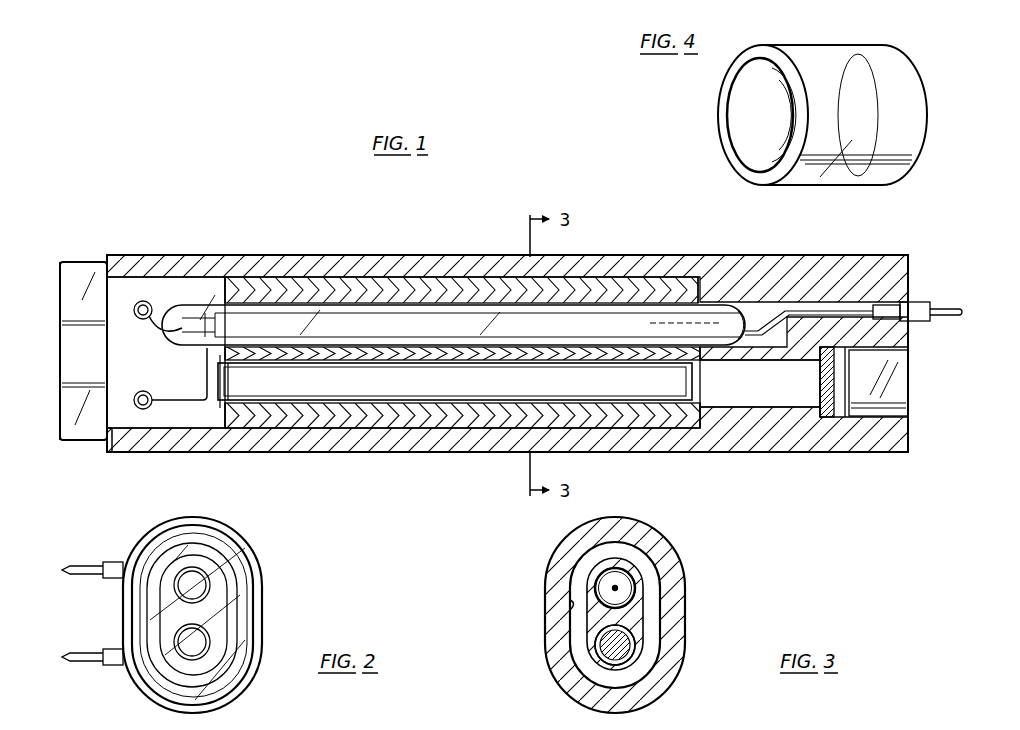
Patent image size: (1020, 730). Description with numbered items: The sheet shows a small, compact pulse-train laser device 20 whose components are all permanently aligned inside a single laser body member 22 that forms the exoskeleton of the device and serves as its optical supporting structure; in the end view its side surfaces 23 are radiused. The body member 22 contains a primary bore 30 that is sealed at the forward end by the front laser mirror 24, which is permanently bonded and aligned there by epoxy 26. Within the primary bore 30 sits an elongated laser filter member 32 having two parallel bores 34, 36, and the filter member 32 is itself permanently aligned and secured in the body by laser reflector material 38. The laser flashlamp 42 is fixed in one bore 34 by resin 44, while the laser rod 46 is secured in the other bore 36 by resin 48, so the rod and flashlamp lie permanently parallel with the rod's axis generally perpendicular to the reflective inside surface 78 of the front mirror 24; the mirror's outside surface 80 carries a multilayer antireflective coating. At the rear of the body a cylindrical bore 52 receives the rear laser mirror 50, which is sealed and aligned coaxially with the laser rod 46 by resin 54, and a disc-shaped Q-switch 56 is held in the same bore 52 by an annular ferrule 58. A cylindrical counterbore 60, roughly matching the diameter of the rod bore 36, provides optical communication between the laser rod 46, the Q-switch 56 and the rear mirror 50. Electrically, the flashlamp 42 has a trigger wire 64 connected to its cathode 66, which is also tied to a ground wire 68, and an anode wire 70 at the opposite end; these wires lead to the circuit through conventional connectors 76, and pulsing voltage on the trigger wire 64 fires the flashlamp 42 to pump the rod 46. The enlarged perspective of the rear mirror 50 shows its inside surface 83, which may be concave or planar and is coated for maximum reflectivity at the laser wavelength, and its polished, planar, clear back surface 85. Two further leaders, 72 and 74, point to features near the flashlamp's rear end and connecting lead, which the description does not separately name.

In FIG. 1, the laser device 20 is at (225, 238).
In FIG. 1, the laser body member 22 is at (298, 266).
In FIG. 2, the laser body member 22 is at (260, 562).
In FIG. 3, the laser body member 22 is at (680, 650).
In FIG. 2, the side surfaces 23 is at (228, 529).
In FIG. 1, the front laser mirror 24 is at (82, 442).
In FIG. 2, the front laser mirror 24 is at (248, 592).
In FIG. 1, the epoxy 26 is at (109, 452).
In FIG. 1, the primary bore 30 is at (203, 423).
In FIG. 3, the primary bore 30 is at (574, 606).
In FIG. 1, the laser filter member 32 is at (333, 411).
In FIG. 3, the laser filter member 32 is at (642, 618).
In FIG. 1, the bore 34 is at (352, 296).
In FIG. 1, the bore 36 is at (352, 445).
In FIG. 1, the laser reflector material 38 is at (665, 423).
In FIG. 3, the laser reflector material 38 is at (632, 552).
In FIG. 1, the laser flashlamp 42 is at (500, 320).
In FIG. 3, the laser flashlamp 42 is at (636, 572).
In FIG. 1, the resin 44 is at (462, 318).
In FIG. 3, the resin 44 is at (600, 573).
In FIG. 1, the laser rod 46 is at (692, 380).
In FIG. 3, the laser rod 46 is at (604, 645).
In FIG. 1, the resin 48 is at (277, 408).
In FIG. 1, the rear laser mirror 50 is at (890, 381).
In FIG. 4, the rear laser mirror 50 is at (828, 46).
In FIG. 1, the cylindrical bore 52 is at (872, 418).
In FIG. 1, the resin 54 is at (906, 419).
In FIG. 1, the Q-switch 56 is at (832, 385).
In FIG. 1, the annular ferrule 58 is at (826, 420).
In FIG. 1, the cylindrical counterbore 60 is at (762, 406).
In FIG. 1, the trigger wire 64 is at (195, 398).
In FIG. 1, the cathode 66 is at (207, 318).
In FIG. 1, the ground wire 68 is at (158, 333).
In FIG. 1, the anode wire 70 is at (663, 322).
In FIG. 3, the anode wire 70 is at (620, 590).
In FIG. 1, the lamp tip 72 is at (748, 303).
In FIG. 1, the lead wire 74 is at (831, 306).
In FIG. 1, the connectors 76 is at (140, 301).
In FIG. 2, the connectors 76 is at (80, 652).
In FIG. 1, the inside surface 78 is at (109, 359).
In FIG. 1, the outside surface 80 is at (60, 373).
In FIG. 4, the inside surface 83 is at (745, 113).
In FIG. 4, the back surface 85 is at (925, 100).